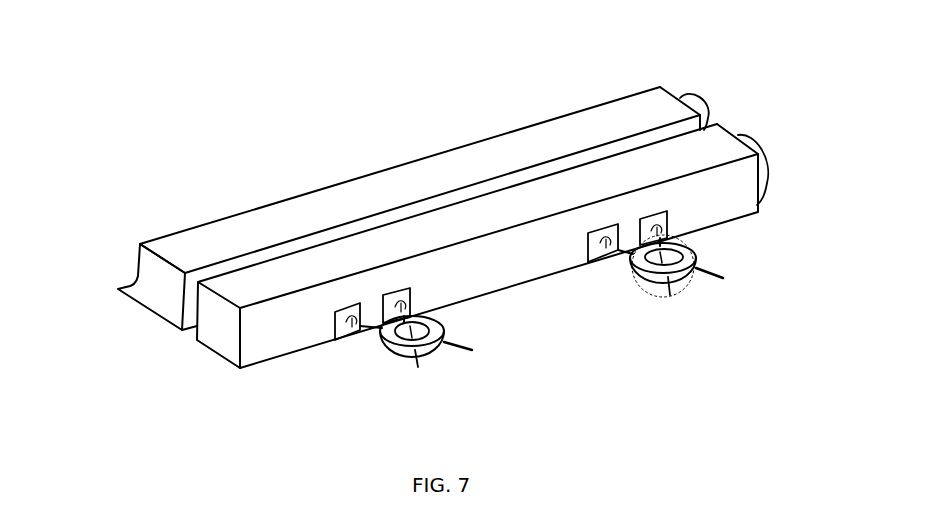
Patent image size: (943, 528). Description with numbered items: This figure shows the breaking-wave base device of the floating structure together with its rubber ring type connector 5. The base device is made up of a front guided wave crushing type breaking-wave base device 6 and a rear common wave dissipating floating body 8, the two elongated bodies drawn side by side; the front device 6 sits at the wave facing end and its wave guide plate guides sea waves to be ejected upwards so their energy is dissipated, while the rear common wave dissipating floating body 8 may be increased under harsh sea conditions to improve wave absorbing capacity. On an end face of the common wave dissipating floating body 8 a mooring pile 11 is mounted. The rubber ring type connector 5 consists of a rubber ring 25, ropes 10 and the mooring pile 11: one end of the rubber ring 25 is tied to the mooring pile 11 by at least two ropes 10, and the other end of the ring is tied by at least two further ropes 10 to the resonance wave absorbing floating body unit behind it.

The rubber ring type connector 5 is at (685, 230).
The guided wave crushing type breaking-wave base device 6 is at (428, 175).
The common wave dissipating floating body 8 is at (403, 248).
The rope 10 is at (472, 350).
The mooring pile 11 is at (604, 255).
The rubber ring 25 is at (397, 343).